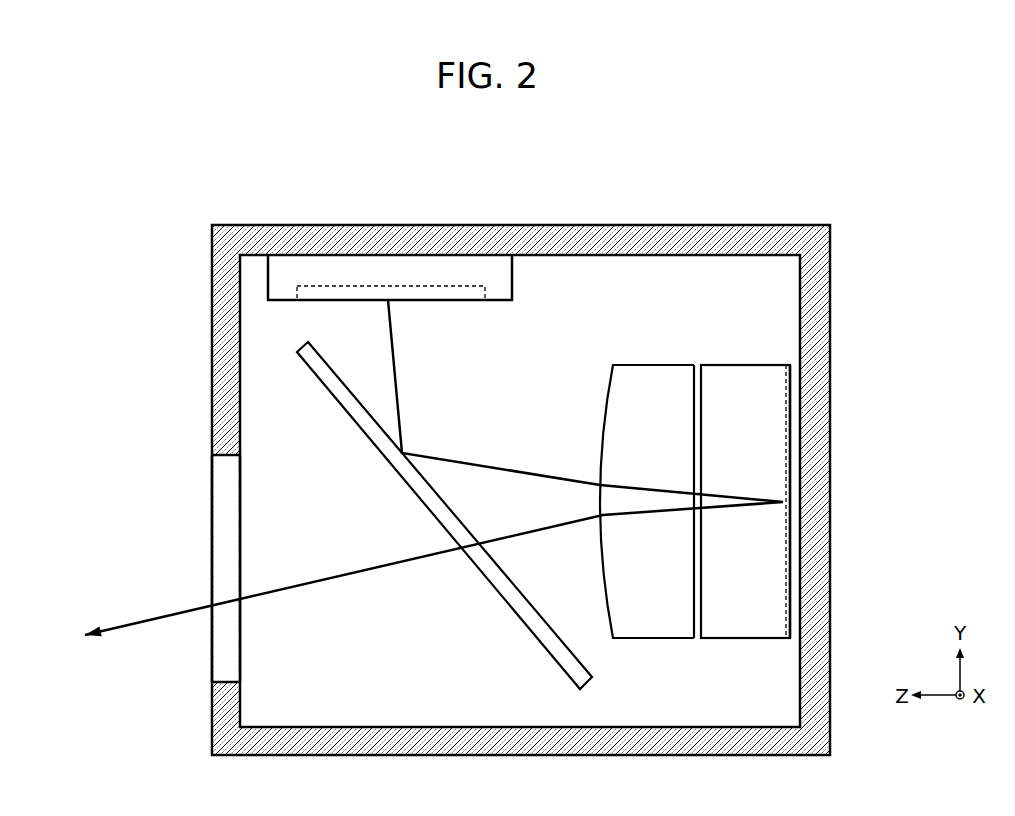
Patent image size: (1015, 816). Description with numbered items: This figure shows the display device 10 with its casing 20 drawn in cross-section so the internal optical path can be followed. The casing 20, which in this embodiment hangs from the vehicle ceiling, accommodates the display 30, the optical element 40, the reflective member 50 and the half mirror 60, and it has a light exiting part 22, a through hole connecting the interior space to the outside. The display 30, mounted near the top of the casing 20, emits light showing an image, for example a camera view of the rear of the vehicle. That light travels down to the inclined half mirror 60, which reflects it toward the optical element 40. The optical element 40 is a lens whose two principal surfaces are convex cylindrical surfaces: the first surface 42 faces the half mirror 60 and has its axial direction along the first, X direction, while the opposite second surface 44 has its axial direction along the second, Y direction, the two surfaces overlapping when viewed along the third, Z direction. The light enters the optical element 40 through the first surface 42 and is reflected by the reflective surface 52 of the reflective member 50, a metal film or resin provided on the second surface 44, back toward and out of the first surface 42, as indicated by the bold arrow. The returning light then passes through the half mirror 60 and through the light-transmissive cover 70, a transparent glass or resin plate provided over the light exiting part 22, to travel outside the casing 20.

The display device 10 is at (115, 188).
The casing 20 is at (210, 355).
The light exiting part 22 is at (232, 457).
The display 30 is at (498, 278).
The optical element 40 is at (712, 499).
The first surface 42 is at (602, 445).
The second surface 44 is at (756, 441).
The reflective member 50 is at (795, 562).
The reflective surface 52 is at (783, 593).
The half mirror 60 is at (415, 481).
The light-transmissive cover 70 is at (225, 538).